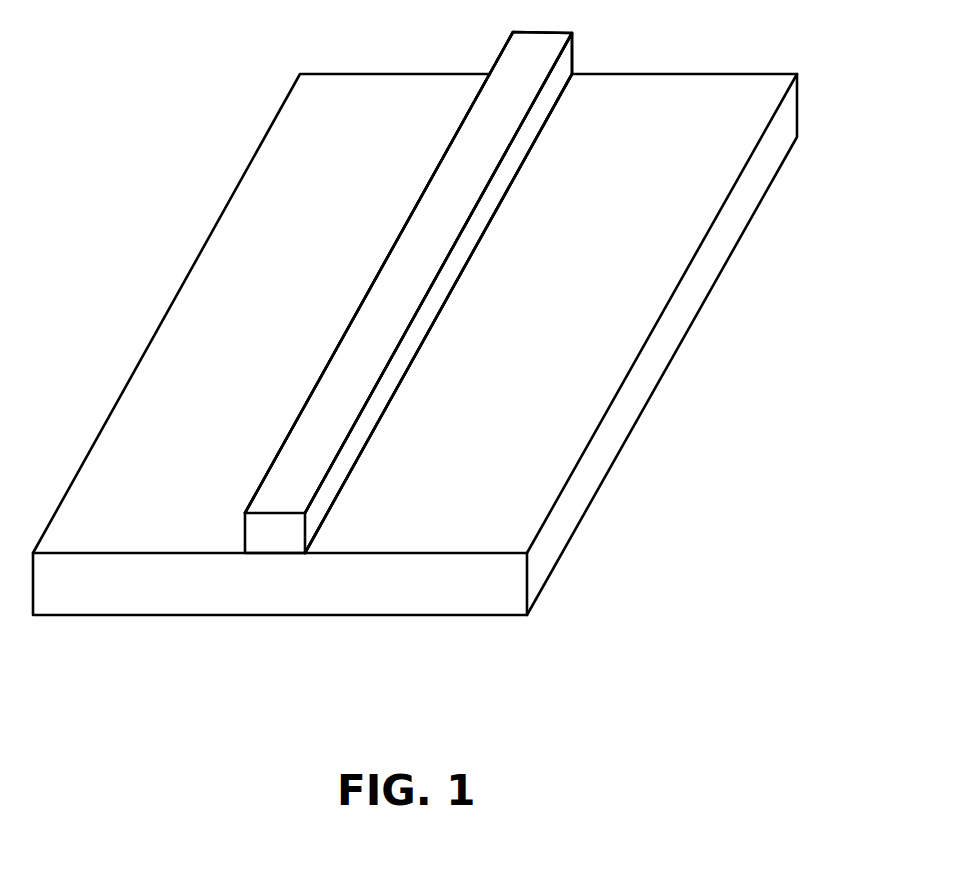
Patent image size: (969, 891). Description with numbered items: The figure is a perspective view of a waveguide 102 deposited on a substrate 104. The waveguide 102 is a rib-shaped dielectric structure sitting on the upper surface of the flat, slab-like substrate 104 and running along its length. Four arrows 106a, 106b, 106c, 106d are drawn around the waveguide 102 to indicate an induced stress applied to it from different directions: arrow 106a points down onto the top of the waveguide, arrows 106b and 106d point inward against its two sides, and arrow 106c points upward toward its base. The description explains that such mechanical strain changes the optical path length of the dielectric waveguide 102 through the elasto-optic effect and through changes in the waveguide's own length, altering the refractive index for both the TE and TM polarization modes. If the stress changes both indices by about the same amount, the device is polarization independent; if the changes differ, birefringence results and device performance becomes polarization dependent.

The waveguide 102 is at (280, 492).
The substrate 104 is at (538, 430).
The arrow 106a is at (430, 240).
The arrow 106b is at (447, 283).
The arrow 106c is at (443, 305).
The arrow 106d is at (362, 285).